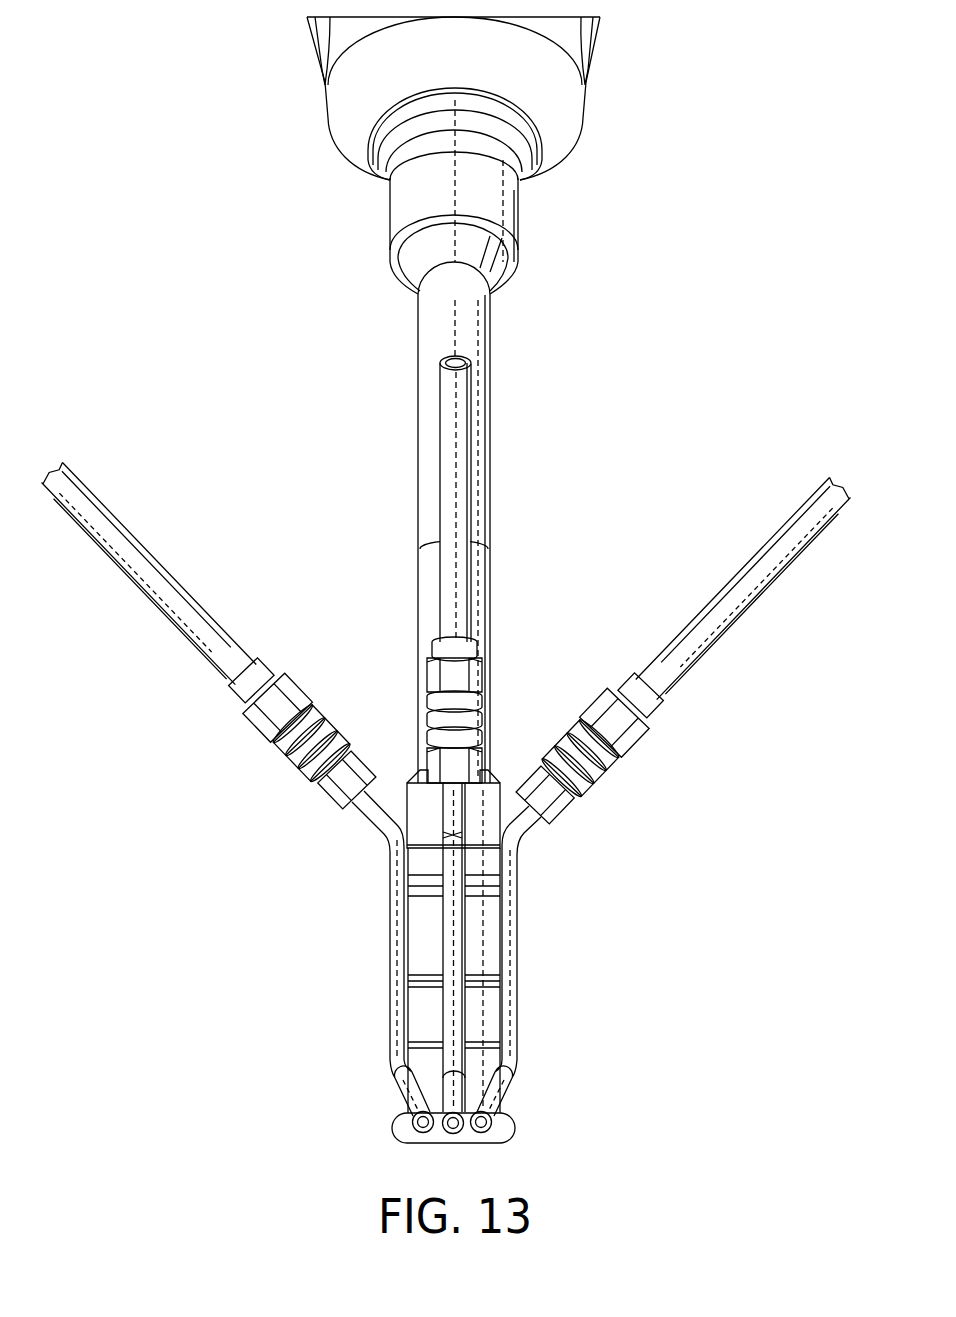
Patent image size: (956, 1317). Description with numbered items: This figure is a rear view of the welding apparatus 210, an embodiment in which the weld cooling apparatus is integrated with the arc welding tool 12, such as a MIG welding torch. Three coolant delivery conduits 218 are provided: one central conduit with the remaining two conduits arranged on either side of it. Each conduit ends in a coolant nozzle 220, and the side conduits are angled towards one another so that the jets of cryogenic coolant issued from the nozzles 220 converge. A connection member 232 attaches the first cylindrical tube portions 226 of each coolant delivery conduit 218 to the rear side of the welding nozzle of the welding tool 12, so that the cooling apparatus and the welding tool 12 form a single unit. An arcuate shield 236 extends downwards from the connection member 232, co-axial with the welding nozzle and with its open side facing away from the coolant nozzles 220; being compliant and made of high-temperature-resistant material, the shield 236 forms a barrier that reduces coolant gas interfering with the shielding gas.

The welding apparatus 210 is at (658, 191).
The arc welding tool 12 is at (491, 488).
The coolant delivery conduits 218 is at (374, 831).
The connection member 232 is at (492, 935).
The first cylindrical tube portions 226 is at (440, 915).
The coolant nozzle 220 is at (511, 1104).
The arcuate shield 236 is at (508, 1136).